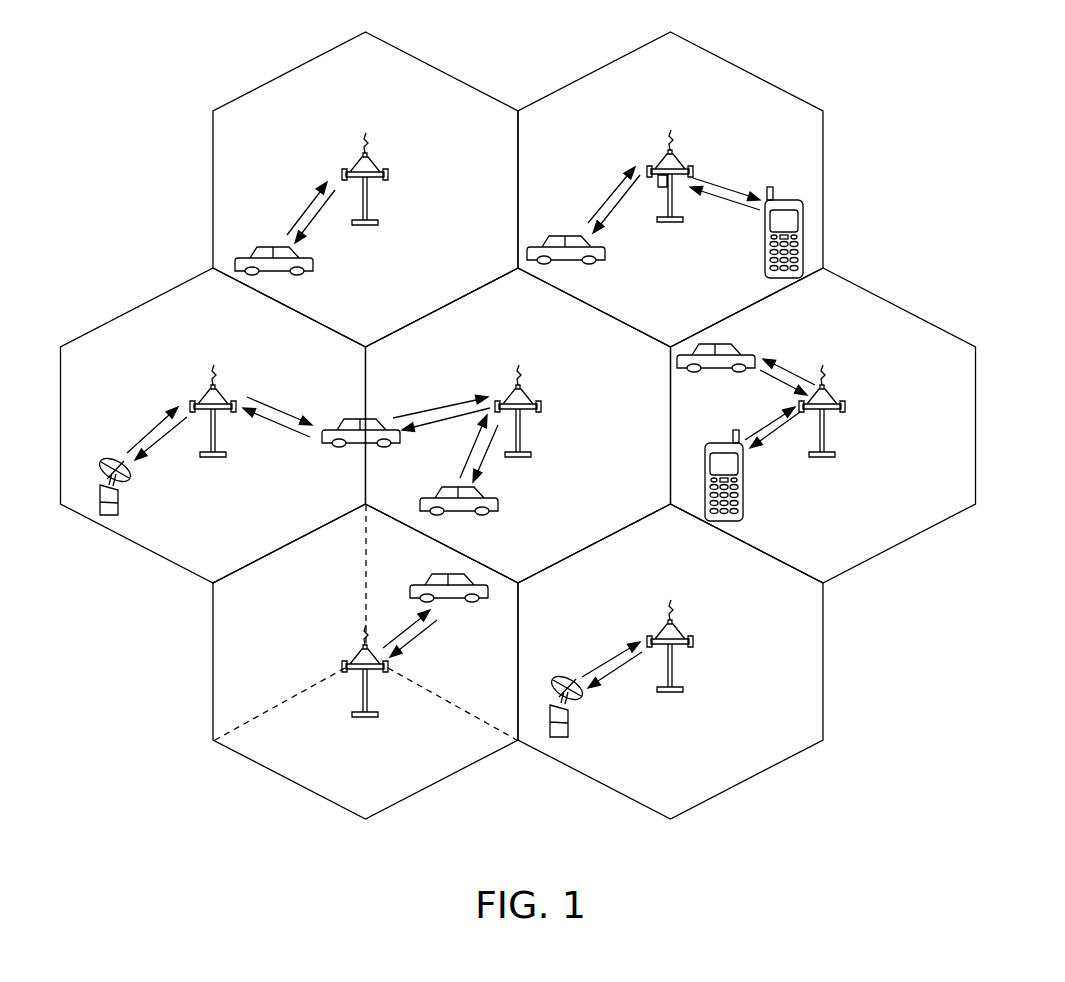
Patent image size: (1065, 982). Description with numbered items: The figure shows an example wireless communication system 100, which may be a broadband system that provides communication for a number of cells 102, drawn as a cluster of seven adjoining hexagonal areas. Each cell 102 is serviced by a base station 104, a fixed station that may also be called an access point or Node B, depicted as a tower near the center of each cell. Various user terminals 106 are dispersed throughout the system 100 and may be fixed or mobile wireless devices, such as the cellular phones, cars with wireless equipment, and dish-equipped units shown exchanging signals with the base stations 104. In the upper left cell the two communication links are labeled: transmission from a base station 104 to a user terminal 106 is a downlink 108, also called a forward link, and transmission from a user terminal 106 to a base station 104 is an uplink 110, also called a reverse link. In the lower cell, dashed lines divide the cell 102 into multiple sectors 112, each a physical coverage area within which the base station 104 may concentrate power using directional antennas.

The wireless communication system 100 is at (952, 121).
The cell 102 is at (298, 66).
The base station 104 is at (343, 661).
The user terminal 106 is at (311, 268).
The downlink 108 is at (310, 220).
The uplink 110 is at (307, 208).
The sector 112 is at (418, 773).